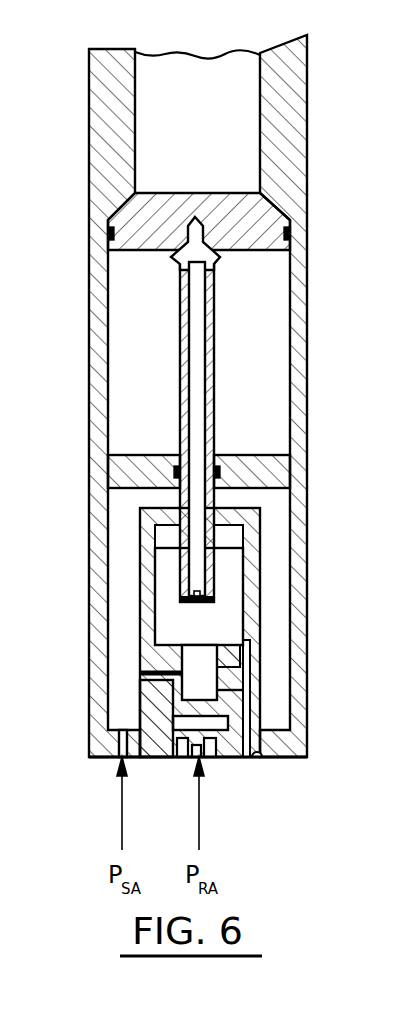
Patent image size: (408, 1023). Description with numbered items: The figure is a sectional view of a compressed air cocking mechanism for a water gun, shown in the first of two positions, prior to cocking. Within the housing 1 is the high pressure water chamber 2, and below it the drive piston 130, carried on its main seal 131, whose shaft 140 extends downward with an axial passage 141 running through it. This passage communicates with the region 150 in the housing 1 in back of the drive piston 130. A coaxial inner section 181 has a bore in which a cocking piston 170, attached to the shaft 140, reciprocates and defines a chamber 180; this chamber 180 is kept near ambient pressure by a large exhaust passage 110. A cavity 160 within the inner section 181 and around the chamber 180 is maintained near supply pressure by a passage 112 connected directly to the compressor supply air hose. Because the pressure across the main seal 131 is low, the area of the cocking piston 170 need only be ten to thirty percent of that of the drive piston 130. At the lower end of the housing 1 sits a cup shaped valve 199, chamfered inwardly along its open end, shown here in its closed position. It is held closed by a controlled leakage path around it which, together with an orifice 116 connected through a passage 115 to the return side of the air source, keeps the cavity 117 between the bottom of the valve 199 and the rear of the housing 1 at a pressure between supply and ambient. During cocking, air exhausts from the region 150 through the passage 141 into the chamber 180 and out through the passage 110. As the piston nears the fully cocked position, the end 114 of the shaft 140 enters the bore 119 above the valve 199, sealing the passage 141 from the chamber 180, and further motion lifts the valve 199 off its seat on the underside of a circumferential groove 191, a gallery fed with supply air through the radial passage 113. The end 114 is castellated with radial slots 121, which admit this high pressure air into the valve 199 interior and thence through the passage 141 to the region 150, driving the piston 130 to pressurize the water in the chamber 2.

The housing 1 is at (298, 85).
The high pressure water chamber 2 is at (226, 72).
The drive piston 130 is at (228, 200).
The main seal 131 is at (292, 235).
The shaft 140 is at (214, 368).
The axial passage 141 is at (193, 330).
The region 150 is at (275, 420).
The cocking piston 170 is at (233, 488).
The cavity 160 is at (278, 530).
The chamber 180 is at (230, 615).
The coaxial inner section 181 is at (262, 587).
The end of the piston shaft 114 is at (178, 585).
The radial slots 121 is at (197, 599).
The bore 119 is at (175, 668).
The circumferential groove 191 is at (240, 660).
The cup shaped valve 199 is at (235, 696).
The radial passage 113 is at (150, 685).
The passage 112 is at (106, 760).
The cavity 117 is at (158, 758).
The orifice 116 is at (180, 758).
The passage 115 is at (210, 758).
The exhaust passage 110 is at (258, 758).